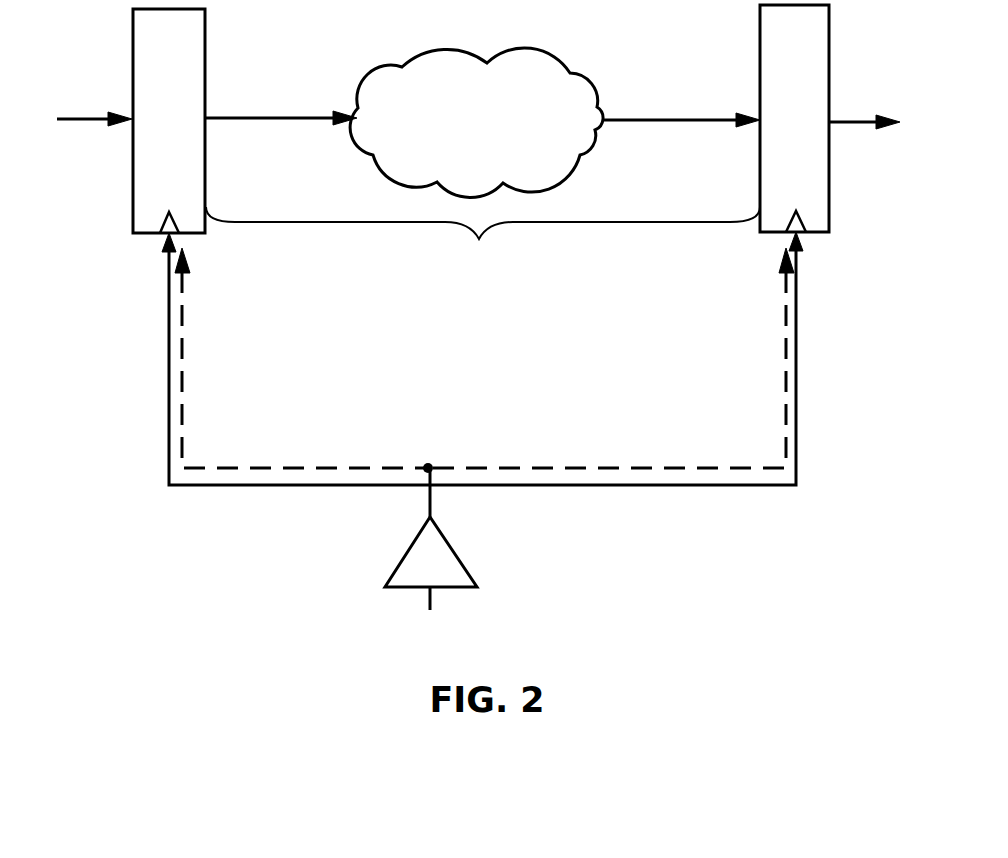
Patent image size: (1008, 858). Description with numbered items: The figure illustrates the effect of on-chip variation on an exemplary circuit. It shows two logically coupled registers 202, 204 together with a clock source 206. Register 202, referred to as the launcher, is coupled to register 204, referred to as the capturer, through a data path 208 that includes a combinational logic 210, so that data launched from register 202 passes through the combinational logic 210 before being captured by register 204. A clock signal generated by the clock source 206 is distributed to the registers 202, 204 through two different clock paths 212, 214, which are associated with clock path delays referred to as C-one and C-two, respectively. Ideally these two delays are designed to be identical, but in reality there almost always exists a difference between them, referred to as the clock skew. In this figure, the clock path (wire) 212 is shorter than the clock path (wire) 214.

The register 202 is at (169, 121).
The register 204 is at (794, 118).
The clock source 206 is at (482, 421).
The data path 208 is at (483, 242).
The combinational logic 210 is at (476, 122).
The clock path 212 is at (245, 468).
The clock path 214 is at (755, 468).